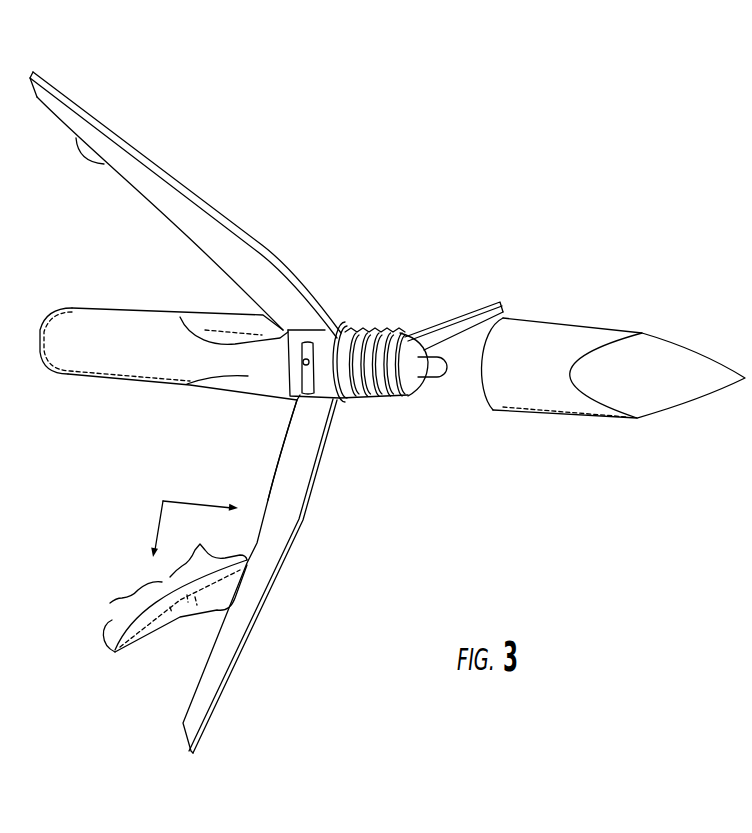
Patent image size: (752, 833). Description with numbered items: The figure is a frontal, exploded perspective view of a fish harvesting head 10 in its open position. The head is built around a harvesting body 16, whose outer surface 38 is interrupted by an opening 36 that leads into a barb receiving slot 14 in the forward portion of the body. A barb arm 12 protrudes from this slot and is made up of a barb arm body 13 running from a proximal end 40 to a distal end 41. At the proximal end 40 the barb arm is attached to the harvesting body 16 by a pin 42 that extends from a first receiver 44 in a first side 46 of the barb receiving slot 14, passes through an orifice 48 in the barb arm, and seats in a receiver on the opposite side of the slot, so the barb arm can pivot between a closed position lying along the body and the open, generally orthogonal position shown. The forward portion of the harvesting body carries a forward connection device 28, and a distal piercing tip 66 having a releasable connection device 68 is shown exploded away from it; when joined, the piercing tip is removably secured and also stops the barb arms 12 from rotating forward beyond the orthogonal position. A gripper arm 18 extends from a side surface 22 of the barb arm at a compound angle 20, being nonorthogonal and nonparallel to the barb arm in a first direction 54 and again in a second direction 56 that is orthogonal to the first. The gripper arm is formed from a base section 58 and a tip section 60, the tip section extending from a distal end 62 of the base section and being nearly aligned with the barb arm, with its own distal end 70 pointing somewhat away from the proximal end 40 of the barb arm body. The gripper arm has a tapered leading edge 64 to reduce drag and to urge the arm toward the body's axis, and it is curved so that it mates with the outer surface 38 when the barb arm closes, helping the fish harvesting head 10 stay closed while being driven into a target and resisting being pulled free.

The fish harvesting head 10 is at (488, 115).
The barb arm 12 is at (215, 213).
The barb arm body 13 is at (180, 186).
The barb receiving slot 14 is at (227, 322).
The harvesting body 16 is at (130, 310).
The gripper arm 18 is at (182, 615).
The compound angle 20 is at (131, 615).
The side surface 22 is at (267, 547).
The forward connection device 28 is at (434, 418).
The opening 36 is at (197, 317).
The outer surface 38 is at (133, 358).
The proximal end 40 is at (342, 370).
The distal end 41 is at (31, 73).
The pin 42 is at (300, 375).
The first receiver 44 is at (320, 353).
The first side 46 is at (360, 332).
The orifice 48 is at (338, 320).
The first direction 54 is at (163, 505).
The second direction 56 is at (186, 502).
The base section 58 is at (181, 584).
The tip section 60 is at (124, 591).
The distal end 62 is at (190, 612).
The leading edge 64 is at (112, 620).
The distal piercing tip 66 is at (667, 403).
The releasable connection device 68 is at (383, 416).
The distal end 70 is at (115, 652).